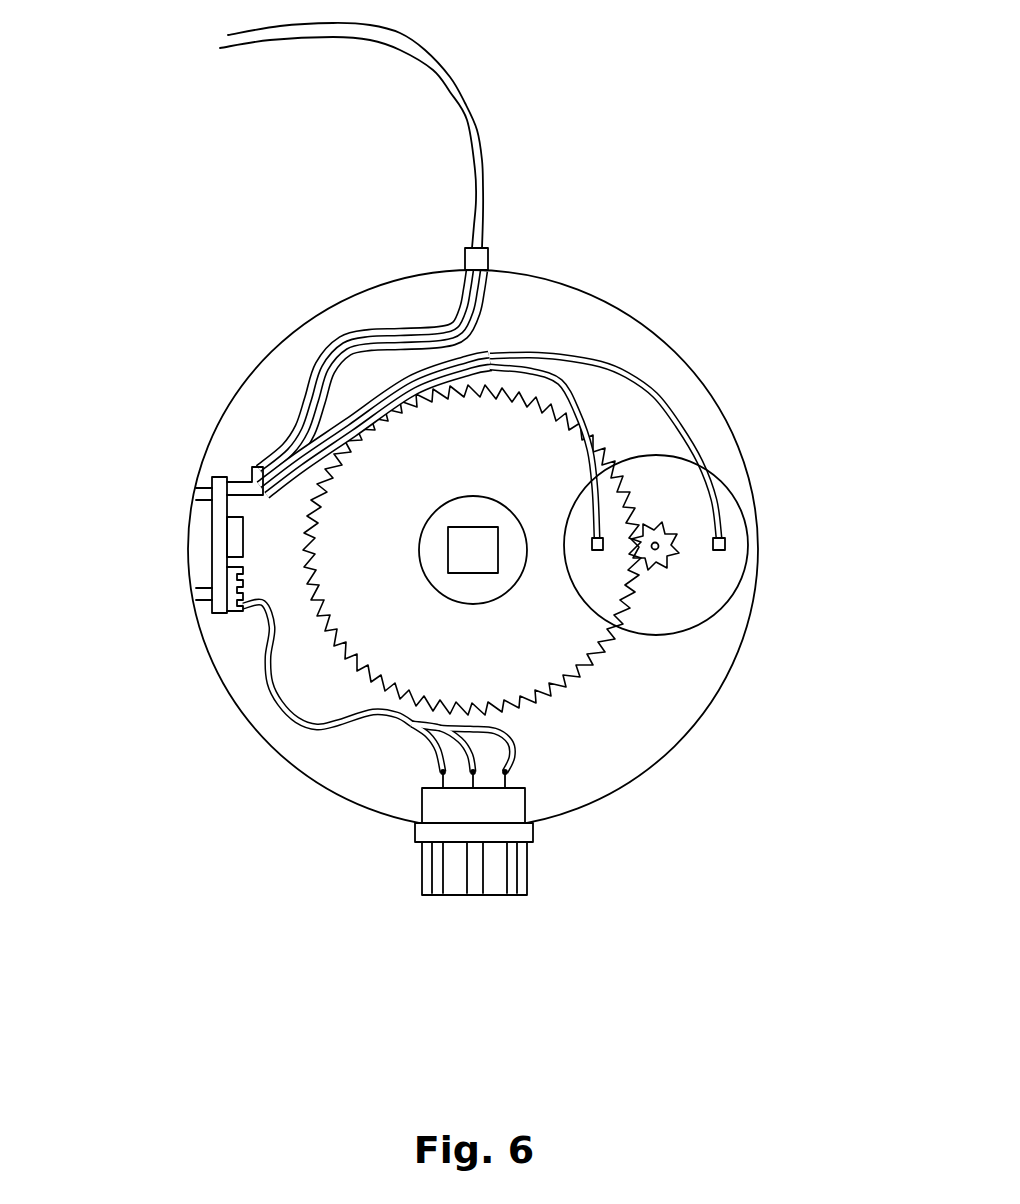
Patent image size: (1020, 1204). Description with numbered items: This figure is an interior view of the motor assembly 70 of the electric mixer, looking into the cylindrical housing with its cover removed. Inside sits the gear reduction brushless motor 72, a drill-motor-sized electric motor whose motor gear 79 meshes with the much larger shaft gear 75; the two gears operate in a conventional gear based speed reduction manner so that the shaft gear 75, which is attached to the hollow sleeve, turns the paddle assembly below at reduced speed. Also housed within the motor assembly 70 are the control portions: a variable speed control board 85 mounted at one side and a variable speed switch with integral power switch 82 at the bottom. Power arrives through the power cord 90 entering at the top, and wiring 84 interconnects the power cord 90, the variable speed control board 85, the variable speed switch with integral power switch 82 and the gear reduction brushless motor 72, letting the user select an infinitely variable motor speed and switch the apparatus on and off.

The motor assembly 70 is at (683, 360).
The gear reduction brushless motor 72 is at (727, 568).
The shaft gear 75 is at (533, 662).
The motor gear 79 is at (660, 563).
The variable speed switch with integral power switch 82 is at (423, 886).
The wiring 84 is at (323, 340).
The variable speed control board 85 is at (220, 548).
The power cord 90 is at (485, 203).